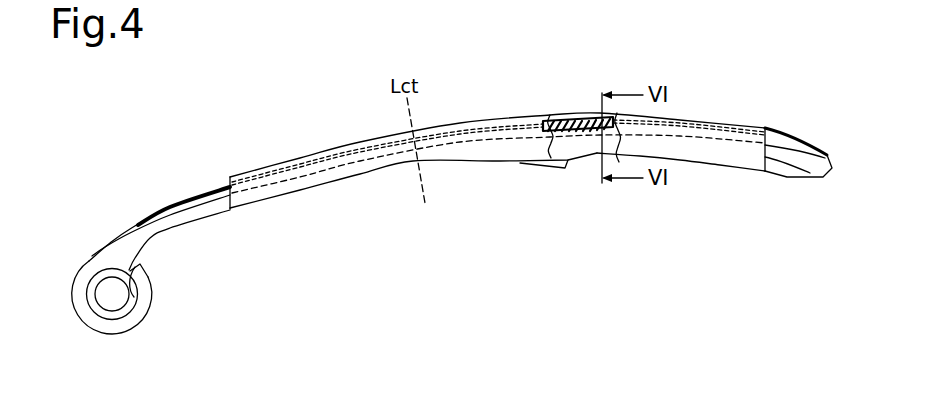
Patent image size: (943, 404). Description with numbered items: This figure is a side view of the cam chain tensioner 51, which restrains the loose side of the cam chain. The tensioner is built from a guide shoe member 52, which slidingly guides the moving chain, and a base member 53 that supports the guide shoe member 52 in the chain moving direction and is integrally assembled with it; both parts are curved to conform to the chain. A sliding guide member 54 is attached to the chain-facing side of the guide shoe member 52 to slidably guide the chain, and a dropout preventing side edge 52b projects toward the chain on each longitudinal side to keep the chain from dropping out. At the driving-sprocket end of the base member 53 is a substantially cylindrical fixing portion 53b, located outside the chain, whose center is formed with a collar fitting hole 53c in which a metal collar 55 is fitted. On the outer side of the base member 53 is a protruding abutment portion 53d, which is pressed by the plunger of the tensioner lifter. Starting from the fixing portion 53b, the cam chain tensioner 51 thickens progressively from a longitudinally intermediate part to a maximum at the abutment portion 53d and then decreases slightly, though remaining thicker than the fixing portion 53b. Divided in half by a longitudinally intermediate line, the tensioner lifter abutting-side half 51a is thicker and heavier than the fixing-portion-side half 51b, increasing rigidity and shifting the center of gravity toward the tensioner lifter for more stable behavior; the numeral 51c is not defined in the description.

The cam chain tensioner 51 is at (455, 104).
The tensioner lifter abutting-side half 51a is at (611, 78).
The fixing-portion-side half 51b is at (278, 146).
The pivot hole 51c is at (112, 297).
The guide shoe member 52 is at (518, 148).
The dropout preventing side edge 52b is at (682, 118).
The base member 53 is at (198, 213).
The fixing portion 53b is at (152, 297).
The collar fitting hole 53c is at (142, 277).
The abutment portion 53d is at (535, 170).
The sliding guide member 54 is at (175, 205).
The collar 55 is at (122, 310).